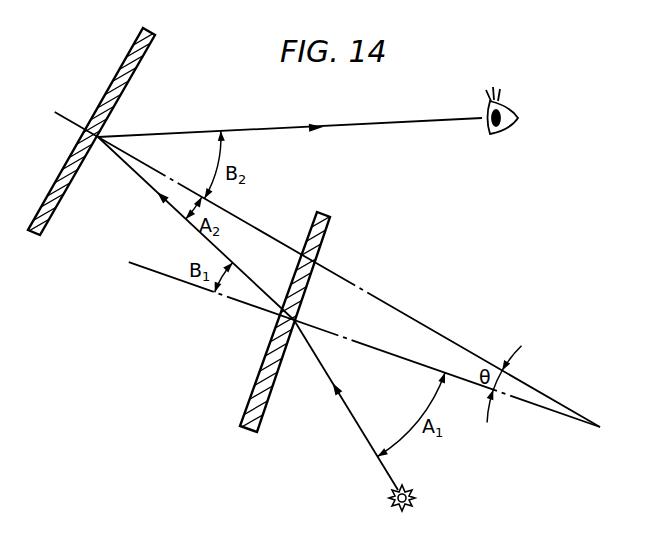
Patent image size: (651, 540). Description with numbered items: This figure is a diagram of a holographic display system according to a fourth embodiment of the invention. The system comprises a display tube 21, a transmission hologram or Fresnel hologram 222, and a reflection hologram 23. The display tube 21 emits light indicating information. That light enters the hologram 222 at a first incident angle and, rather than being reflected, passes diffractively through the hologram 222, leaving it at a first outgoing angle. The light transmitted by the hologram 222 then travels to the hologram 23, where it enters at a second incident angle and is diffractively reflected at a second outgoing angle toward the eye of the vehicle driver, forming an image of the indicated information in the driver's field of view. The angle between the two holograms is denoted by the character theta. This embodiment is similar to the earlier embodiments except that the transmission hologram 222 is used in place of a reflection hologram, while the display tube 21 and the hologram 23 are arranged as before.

The hologram 23 is at (131, 82).
The transmission hologram 222 is at (329, 214).
The display tube 21 is at (414, 498).